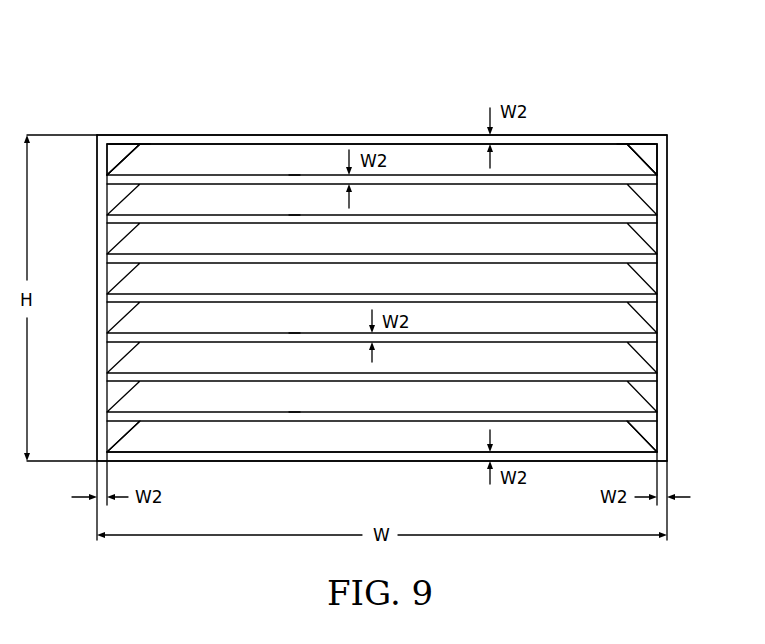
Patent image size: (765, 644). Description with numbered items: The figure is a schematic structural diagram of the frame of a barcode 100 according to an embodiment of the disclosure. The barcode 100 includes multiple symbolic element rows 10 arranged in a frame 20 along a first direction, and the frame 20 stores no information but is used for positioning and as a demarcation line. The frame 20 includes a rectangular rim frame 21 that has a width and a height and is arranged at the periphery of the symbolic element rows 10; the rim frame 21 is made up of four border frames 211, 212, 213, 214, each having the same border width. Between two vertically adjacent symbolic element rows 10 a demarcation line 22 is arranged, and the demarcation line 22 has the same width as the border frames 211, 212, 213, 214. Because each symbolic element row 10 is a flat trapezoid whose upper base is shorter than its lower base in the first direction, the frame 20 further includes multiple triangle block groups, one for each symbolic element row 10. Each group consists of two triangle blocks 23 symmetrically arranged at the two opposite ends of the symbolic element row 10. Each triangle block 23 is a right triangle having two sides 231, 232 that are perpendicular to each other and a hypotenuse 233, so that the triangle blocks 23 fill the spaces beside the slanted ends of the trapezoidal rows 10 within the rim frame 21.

The barcode 100 is at (398, 38).
The symbolic element row 10 is at (199, 170).
The frame 20 is at (329, 132).
The rim frame 21 is at (668, 166).
The border frame 211 is at (411, 134).
The border frame 212 is at (97, 235).
The border frame 213 is at (290, 462).
The border frame 214 is at (658, 204).
The demarcation line 22 is at (289, 172).
The triangle block 23 is at (205, 87).
The side of triangle block 231 is at (100, 157).
The side of triangle block 232 is at (122, 143).
The hypotenuse 233 is at (150, 157).